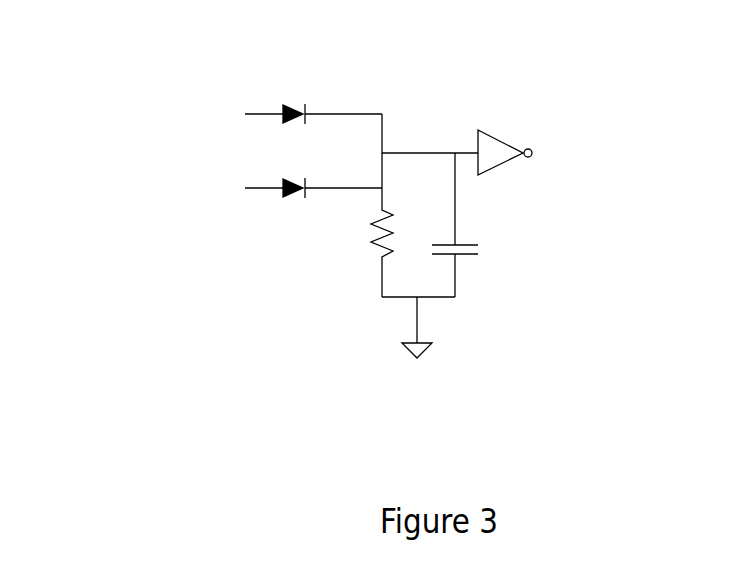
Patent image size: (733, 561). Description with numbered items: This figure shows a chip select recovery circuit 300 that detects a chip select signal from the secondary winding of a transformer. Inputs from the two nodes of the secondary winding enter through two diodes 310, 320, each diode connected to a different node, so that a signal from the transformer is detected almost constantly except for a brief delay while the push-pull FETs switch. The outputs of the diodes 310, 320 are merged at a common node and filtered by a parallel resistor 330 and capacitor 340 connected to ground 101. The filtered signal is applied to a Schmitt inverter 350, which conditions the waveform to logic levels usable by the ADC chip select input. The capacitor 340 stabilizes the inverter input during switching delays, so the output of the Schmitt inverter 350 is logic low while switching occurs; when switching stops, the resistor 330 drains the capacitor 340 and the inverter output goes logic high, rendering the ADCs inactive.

The chip select recovery circuit 300 is at (400, 210).
The diode 310 is at (313, 129).
The diode 320 is at (313, 208).
The resistor 330 is at (351, 233).
The capacitor 340 is at (482, 225).
The Schmitt inverter 350 is at (505, 139).
The ground 101 is at (435, 352).